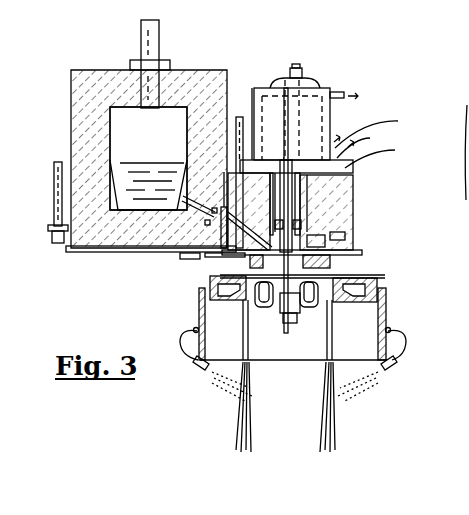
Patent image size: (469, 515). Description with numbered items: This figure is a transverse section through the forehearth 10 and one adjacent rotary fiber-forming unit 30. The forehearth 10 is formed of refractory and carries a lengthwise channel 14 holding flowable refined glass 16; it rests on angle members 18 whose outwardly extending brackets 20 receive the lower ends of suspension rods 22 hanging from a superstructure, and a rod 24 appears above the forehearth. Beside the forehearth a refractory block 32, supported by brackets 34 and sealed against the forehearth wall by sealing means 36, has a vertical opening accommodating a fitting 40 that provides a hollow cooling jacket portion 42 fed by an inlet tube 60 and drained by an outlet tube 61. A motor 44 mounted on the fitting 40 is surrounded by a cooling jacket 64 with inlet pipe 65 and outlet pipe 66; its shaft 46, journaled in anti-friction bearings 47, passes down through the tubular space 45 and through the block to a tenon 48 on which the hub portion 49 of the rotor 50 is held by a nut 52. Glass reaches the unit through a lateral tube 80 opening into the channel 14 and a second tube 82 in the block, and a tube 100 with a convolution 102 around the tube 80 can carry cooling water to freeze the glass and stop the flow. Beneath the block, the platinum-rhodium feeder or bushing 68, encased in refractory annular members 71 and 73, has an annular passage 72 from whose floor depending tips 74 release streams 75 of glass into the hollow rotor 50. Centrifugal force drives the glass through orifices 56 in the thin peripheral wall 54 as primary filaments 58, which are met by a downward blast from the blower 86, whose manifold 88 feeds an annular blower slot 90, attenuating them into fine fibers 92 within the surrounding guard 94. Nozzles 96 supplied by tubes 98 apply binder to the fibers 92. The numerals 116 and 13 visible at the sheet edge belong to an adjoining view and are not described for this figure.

The forehearth 10 is at (94, 61).
The support rod 24 is at (141, 29).
The rods or suspension members 22 is at (54, 205).
The tube 100 is at (188, 140).
The flowable refined glass 16 is at (123, 162).
The channel 14 is at (130, 205).
The brackets 20 is at (49, 232).
The angle members or bars 18 is at (70, 250).
The tube 80 is at (195, 200).
The convolution or partial convolution 102 is at (185, 256).
The sealing means 36 is at (200, 258).
The cooling jacket 64 is at (250, 88).
The motor 44 is at (305, 80).
The outlet pipe 66 is at (344, 92).
The fitting 40 is at (268, 160).
The tubular space 45 is at (283, 158).
The inlet pipe 65 is at (376, 131).
The outlet tube 61 is at (361, 143).
The inlet tube 60 is at (379, 154).
The fiber-forming unit 30 is at (372, 170).
The second tube 82 is at (251, 211).
The member or block 32 is at (353, 180).
The hollow cooling jacket portion 42 is at (320, 202).
The shaft 46 is at (300, 178).
The anti-friction guide bearings 47 is at (300, 212).
The annularly shaped member 73 is at (325, 236).
The annularly shaped member 71 is at (345, 238).
The structural members or brackets 34 is at (355, 251).
The stream feeder or bushing 68 is at (330, 262).
The depending projections or tips 74 is at (330, 275).
The blower construction 86 is at (386, 280).
The annular manifold or chamber 88 is at (360, 290).
The primary filaments 58 is at (268, 300).
The openings or orifices 56 is at (276, 305).
The stream 75 is at (281, 315).
The peripheral wall 54 is at (320, 310).
The rotor or spinner 50 is at (325, 320).
The tenon 48 is at (265, 310).
The hub portion 49 is at (298, 312).
The nut 52 is at (296, 323).
The annular channel or passage 72 is at (235, 272).
The annular blower slot 90 is at (228, 292).
The circular member or guard 94 is at (203, 302).
The tubes 98 is at (186, 340).
The nozzles 96 is at (200, 369).
The fibers 92 is at (242, 432).
The adjacent figure numeral 116 is at (400, 3).
The adjacent figure numeral 13 is at (456, 2).